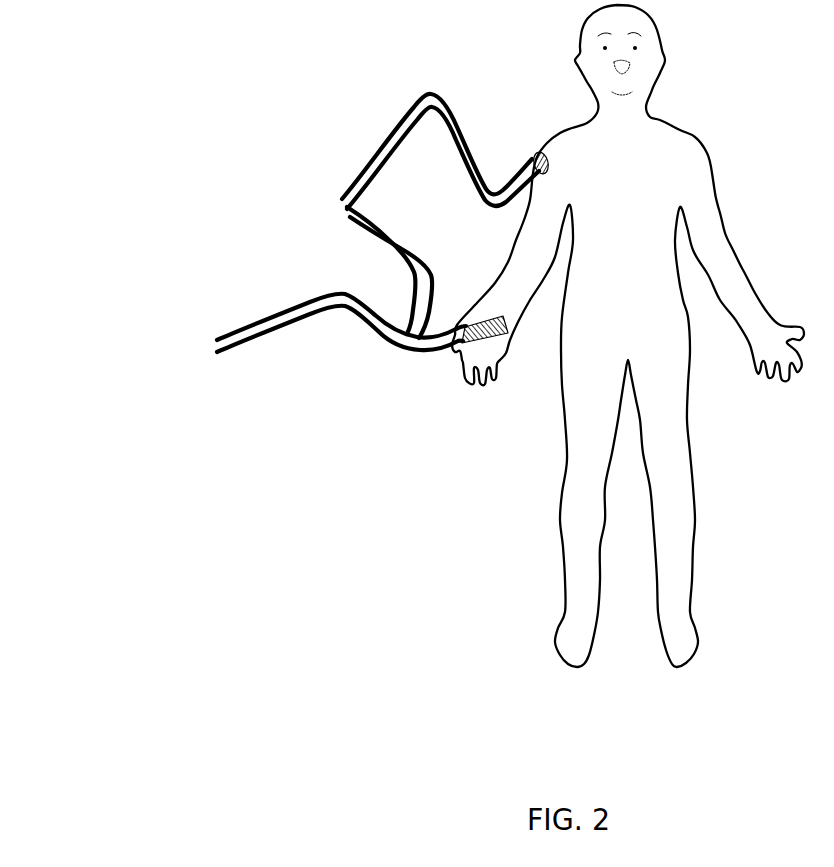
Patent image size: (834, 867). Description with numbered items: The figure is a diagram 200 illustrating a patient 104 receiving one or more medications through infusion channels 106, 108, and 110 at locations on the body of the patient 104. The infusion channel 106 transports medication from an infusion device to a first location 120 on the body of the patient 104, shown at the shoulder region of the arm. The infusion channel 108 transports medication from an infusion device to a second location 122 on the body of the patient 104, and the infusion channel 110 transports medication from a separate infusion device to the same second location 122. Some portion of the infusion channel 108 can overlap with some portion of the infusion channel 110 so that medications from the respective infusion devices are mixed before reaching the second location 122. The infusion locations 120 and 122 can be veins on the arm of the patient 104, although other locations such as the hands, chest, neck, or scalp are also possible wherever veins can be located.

The patient 104 is at (668, 157).
The infusion channel 106 is at (457, 123).
The infusion channel 108 is at (447, 246).
The infusion channel 110 is at (396, 347).
The first location 120 is at (567, 165).
The second location 122 is at (503, 338).
The diagram 200 is at (79, 679).